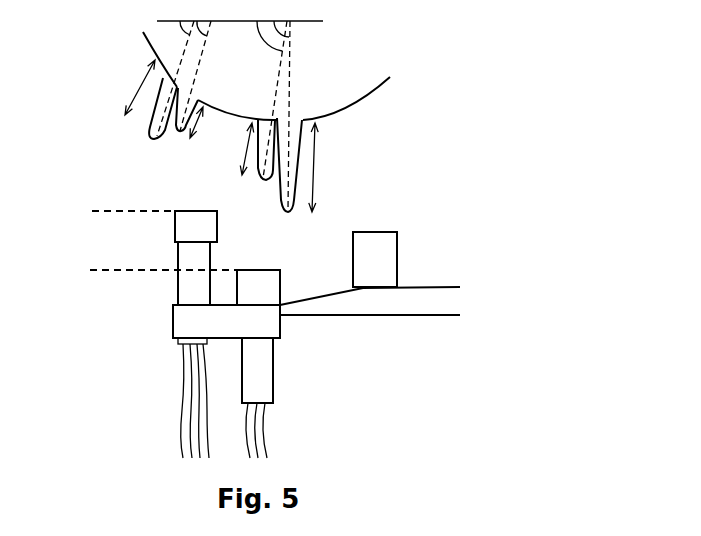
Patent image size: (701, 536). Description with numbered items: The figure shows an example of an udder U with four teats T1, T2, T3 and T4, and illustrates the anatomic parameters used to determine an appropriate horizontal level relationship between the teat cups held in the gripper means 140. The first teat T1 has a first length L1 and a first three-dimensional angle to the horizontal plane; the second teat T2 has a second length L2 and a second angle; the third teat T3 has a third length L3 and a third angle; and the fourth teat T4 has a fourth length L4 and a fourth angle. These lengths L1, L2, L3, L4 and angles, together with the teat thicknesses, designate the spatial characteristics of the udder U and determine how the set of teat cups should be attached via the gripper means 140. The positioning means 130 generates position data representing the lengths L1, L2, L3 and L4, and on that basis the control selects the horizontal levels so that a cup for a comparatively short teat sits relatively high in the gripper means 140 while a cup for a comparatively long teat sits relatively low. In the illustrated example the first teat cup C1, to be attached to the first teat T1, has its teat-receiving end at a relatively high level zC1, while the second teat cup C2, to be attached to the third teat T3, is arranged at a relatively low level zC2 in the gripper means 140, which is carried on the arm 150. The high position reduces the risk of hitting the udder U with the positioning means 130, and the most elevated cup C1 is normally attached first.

The udder U is at (357, 52).
The first teat T1 is at (175, 135).
The second teat T2 is at (145, 130).
The third teat T3 is at (297, 190).
The fourth teat T4 is at (263, 180).
The first length L1 is at (211, 124).
The second length L2 is at (130, 87).
The third length L3 is at (329, 167).
The fourth length L4 is at (234, 149).
The level of first teat cup zC1 is at (114, 212).
The level of second teat cup zC2 is at (146, 271).
The first teat cup C1 is at (178, 285).
The second teat cup C2 is at (273, 363).
The positioning means 130 is at (395, 258).
The gripper means 140 is at (173, 323).
The robot arm 150 is at (443, 303).